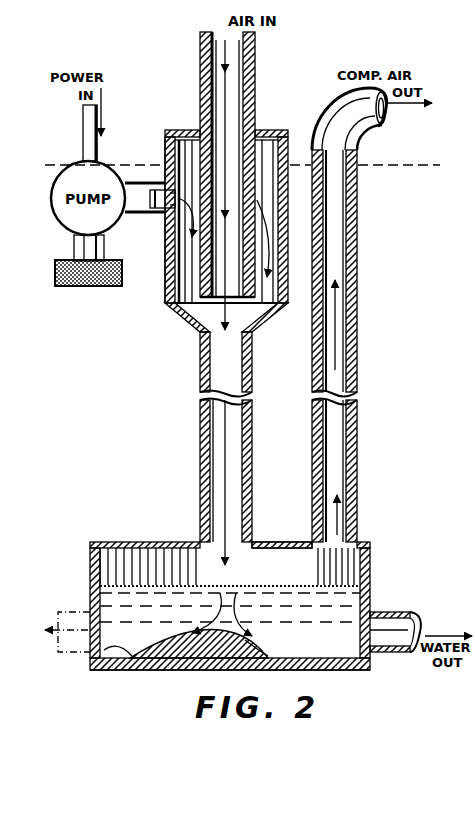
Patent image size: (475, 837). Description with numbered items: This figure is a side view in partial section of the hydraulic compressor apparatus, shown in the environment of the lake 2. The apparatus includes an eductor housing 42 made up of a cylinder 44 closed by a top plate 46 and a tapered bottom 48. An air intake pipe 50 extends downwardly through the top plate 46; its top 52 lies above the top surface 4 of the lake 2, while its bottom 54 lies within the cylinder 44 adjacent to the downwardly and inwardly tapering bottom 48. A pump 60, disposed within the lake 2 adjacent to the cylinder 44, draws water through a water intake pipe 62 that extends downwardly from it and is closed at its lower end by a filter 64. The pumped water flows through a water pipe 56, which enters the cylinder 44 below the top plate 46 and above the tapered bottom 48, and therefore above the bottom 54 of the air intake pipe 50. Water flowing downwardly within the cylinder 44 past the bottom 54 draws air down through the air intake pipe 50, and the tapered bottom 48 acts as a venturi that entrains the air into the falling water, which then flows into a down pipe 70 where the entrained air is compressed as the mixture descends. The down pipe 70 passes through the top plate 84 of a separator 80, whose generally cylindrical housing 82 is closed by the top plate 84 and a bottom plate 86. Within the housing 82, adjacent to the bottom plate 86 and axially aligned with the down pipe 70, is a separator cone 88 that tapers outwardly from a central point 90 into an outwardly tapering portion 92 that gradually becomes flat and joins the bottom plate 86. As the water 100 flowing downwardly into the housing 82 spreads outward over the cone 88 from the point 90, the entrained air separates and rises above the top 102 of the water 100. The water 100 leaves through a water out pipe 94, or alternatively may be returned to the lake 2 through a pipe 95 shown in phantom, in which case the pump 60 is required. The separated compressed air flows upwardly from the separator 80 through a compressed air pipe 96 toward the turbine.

The lake 2 is at (381, 178).
The top surface of the lake 4 is at (424, 162).
The eductor housing 42 is at (276, 128).
The cylinder 44 is at (165, 141).
The top plate 46 is at (183, 130).
The tapered bottom 48 is at (185, 325).
The air intake pipe 50 is at (200, 74).
The top of the air intake pipe 52 is at (200, 33).
The bottom of the air intake pipe 54 is at (256, 326).
The water pipe 56 is at (152, 212).
The pump 60 is at (80, 157).
The water intake pipe 62 is at (75, 248).
The filter 64 is at (100, 287).
The down pipe 70 is at (200, 492).
The separator 80 is at (175, 538).
The cylindrical housing 82 is at (370, 578).
The top plate 84 is at (280, 542).
The bottom plate 86 is at (360, 670).
The separator cone 88 is at (250, 648).
The central point 90 is at (198, 642).
The outwardly tapering portion 92 is at (102, 645).
The water out pipe 94 is at (400, 612).
The pipe 95 is at (76, 612).
The compressed air pipe 96 is at (358, 280).
The water 100 is at (160, 590).
The top of the water 102 is at (296, 575).